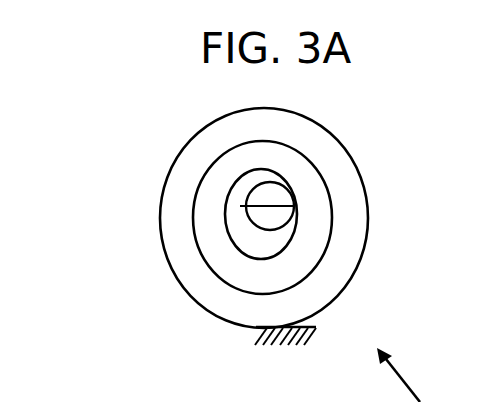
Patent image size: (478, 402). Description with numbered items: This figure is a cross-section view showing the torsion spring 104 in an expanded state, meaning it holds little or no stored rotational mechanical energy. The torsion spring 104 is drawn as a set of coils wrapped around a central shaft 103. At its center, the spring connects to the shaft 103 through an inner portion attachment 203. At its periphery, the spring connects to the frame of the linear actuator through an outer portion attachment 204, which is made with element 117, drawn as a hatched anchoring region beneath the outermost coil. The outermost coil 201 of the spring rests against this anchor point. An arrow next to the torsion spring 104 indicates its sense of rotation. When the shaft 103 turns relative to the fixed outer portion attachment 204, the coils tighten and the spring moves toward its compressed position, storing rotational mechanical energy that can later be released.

The outer roll 201 is at (340, 133).
The inner portion attachment 203 is at (273, 208).
The shaft 103 is at (270, 193).
The outer portion attachment 204 is at (303, 325).
The element 117 is at (258, 334).
The torsion spring 104 is at (128, 185).